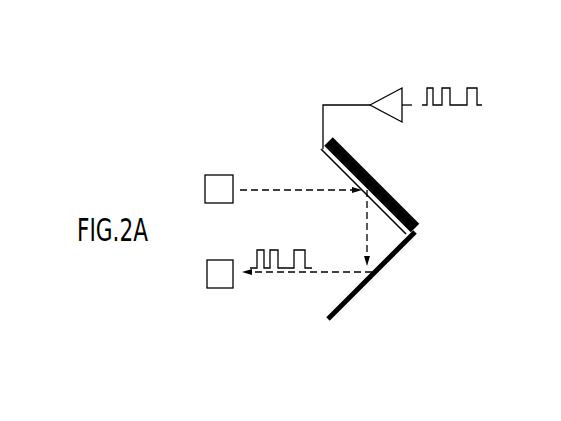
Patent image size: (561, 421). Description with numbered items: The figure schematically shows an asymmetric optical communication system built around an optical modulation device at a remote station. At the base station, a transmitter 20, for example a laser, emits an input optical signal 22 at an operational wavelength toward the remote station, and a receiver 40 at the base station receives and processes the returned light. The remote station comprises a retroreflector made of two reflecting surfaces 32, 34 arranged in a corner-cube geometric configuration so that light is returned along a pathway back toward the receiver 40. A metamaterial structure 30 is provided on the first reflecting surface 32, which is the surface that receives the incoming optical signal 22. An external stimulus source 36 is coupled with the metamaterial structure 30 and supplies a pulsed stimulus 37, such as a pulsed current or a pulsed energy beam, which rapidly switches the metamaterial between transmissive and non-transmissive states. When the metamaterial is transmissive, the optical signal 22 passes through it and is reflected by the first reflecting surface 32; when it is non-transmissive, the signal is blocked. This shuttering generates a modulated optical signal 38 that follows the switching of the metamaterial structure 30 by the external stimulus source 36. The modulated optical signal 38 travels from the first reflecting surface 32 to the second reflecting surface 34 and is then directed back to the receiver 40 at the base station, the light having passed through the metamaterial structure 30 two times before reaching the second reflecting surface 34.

The transmitter 20 is at (220, 175).
The optical signal 22 is at (283, 190).
The metamaterial structure 30 is at (332, 161).
The first reflecting surface 32 is at (388, 190).
The second reflecting surface 34 is at (388, 263).
The external stimulus source 36 is at (388, 90).
The pulsed stimulus 37 is at (477, 88).
The modulated optical signal 38 is at (301, 273).
The receiver 40 is at (220, 288).